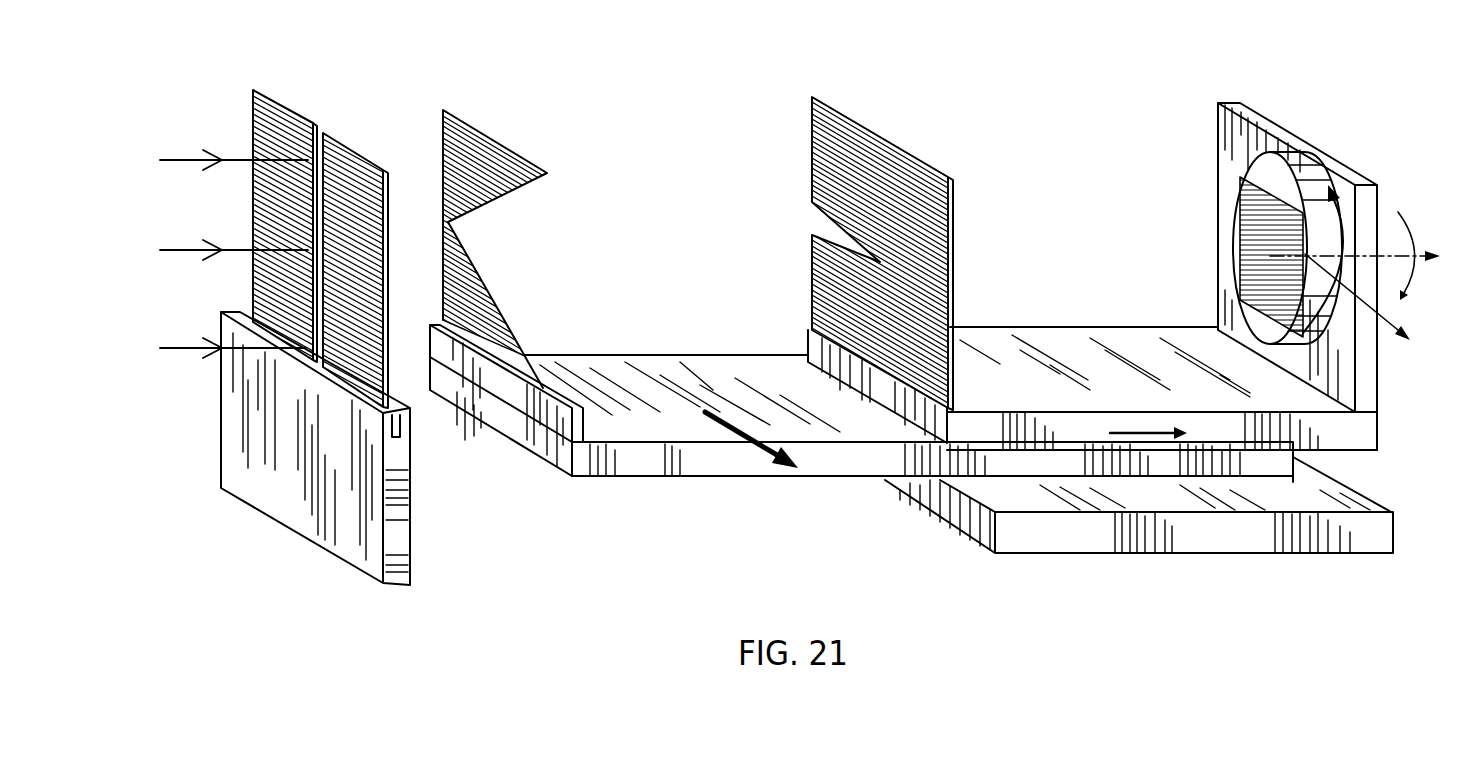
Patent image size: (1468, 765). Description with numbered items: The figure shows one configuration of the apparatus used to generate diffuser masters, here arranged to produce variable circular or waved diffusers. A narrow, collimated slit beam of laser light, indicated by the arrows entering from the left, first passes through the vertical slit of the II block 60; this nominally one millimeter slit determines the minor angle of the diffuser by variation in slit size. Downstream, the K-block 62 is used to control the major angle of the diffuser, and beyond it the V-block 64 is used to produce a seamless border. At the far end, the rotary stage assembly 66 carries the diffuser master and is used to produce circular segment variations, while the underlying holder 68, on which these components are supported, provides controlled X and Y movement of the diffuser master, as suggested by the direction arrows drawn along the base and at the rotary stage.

The II block 60 is at (316, 103).
The K-block 62 is at (493, 122).
The V-block 64 is at (872, 108).
The rotary stage assembly 66 is at (1228, 183).
The holder 68 is at (876, 520).